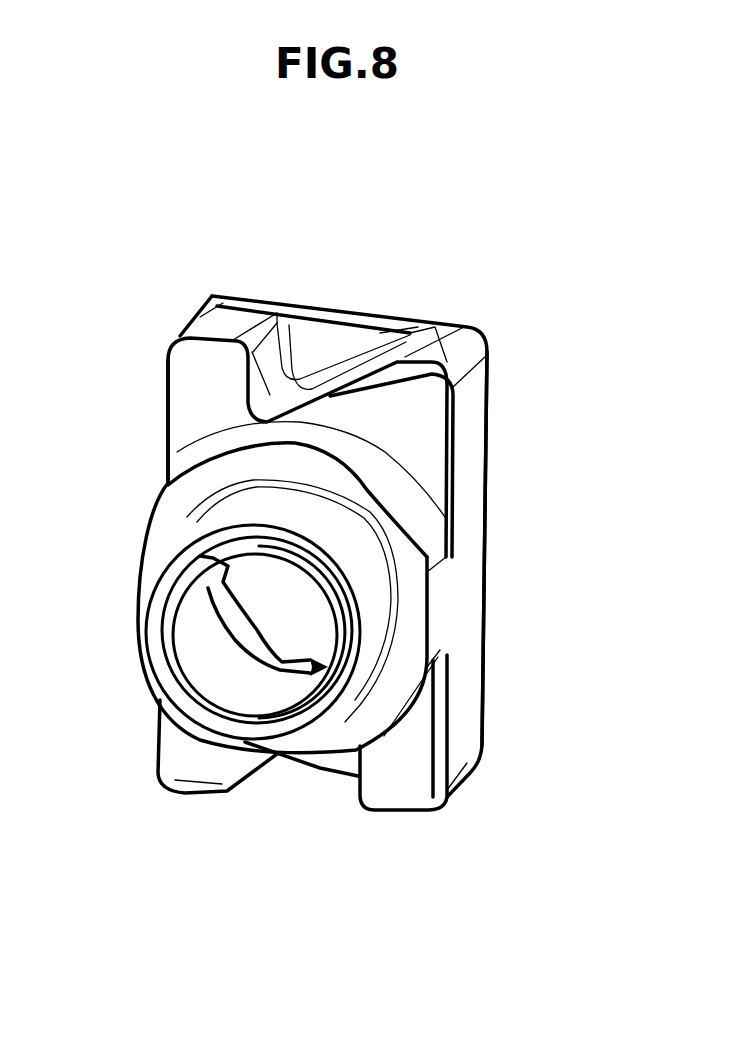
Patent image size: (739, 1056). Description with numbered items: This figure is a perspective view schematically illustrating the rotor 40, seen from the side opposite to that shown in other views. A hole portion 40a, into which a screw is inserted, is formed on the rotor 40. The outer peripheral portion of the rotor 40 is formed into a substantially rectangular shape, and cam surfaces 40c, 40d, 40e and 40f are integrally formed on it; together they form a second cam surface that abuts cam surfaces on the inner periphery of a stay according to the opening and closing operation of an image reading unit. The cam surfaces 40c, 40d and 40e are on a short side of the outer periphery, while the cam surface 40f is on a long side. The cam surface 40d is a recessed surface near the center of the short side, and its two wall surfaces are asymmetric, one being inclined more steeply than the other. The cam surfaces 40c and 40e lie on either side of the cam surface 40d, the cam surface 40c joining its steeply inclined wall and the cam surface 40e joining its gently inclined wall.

The rotor 40 is at (482, 193).
The hole portion 40a is at (267, 610).
The cam surface 40c is at (225, 327).
The cam surface 40d is at (283, 390).
The cam surface 40e is at (463, 353).
The cam surface 40f is at (167, 396).